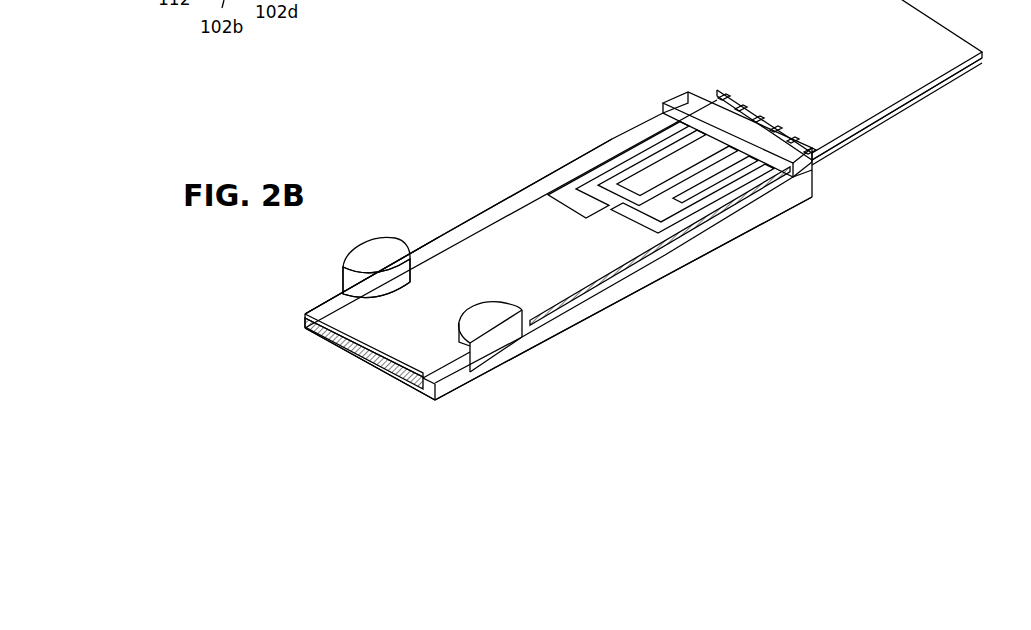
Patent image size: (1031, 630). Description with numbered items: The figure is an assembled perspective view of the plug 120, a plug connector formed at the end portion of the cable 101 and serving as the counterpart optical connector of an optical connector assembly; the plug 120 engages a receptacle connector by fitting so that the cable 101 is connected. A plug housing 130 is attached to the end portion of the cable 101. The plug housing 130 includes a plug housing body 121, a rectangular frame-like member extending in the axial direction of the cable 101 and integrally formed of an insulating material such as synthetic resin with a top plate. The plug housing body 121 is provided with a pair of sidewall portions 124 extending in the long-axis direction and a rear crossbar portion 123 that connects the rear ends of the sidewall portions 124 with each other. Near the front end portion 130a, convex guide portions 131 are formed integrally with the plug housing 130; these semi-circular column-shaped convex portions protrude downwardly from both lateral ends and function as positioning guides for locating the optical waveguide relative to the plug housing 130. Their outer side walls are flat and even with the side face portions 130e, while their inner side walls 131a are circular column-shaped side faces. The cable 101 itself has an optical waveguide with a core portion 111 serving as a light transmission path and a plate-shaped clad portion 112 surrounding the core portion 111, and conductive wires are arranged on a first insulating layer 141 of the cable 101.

The cable 101 is at (913, 100).
The core portion 111 is at (357, 343).
The clad portion 112 is at (399, 380).
The plug 120 is at (810, 281).
The plug housing body 121 is at (793, 203).
The rear crossbar portion 123 is at (678, 92).
The sidewall portions 124 is at (516, 196).
The plug housing 130 is at (654, 284).
The front end portion 130a is at (380, 362).
The side face portions 130e is at (465, 388).
The convex guide portions 131 is at (372, 244).
The inner side walls 131a is at (405, 278).
The first insulating layer 141 is at (808, 52).